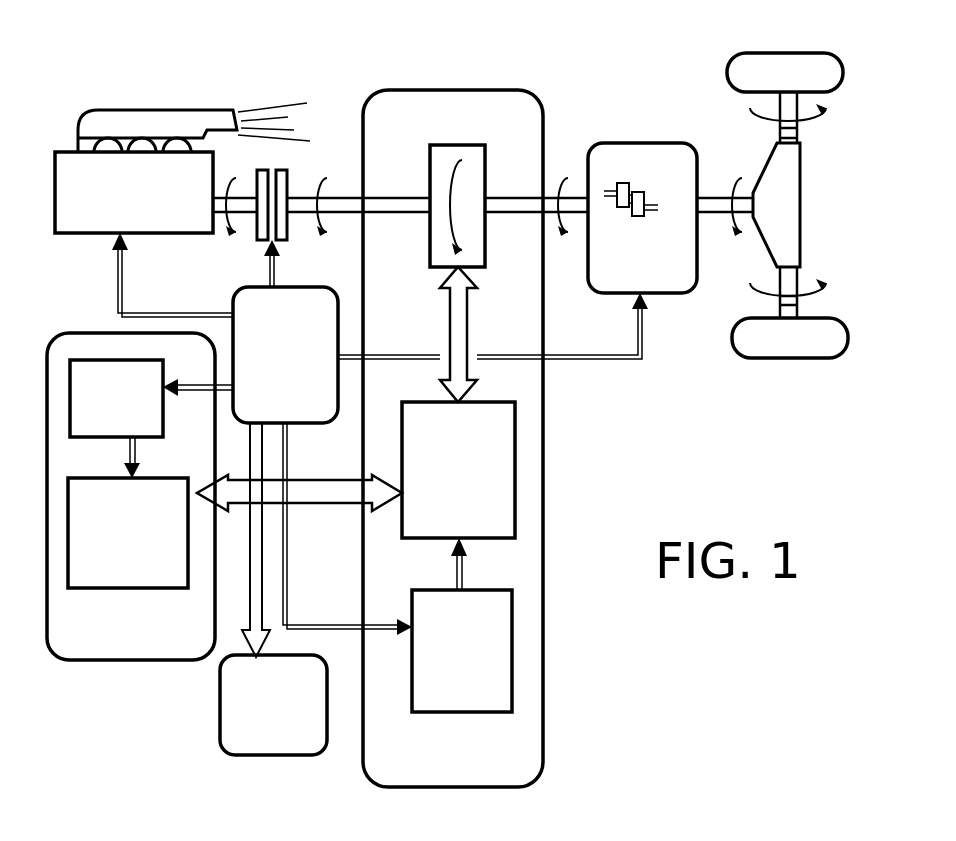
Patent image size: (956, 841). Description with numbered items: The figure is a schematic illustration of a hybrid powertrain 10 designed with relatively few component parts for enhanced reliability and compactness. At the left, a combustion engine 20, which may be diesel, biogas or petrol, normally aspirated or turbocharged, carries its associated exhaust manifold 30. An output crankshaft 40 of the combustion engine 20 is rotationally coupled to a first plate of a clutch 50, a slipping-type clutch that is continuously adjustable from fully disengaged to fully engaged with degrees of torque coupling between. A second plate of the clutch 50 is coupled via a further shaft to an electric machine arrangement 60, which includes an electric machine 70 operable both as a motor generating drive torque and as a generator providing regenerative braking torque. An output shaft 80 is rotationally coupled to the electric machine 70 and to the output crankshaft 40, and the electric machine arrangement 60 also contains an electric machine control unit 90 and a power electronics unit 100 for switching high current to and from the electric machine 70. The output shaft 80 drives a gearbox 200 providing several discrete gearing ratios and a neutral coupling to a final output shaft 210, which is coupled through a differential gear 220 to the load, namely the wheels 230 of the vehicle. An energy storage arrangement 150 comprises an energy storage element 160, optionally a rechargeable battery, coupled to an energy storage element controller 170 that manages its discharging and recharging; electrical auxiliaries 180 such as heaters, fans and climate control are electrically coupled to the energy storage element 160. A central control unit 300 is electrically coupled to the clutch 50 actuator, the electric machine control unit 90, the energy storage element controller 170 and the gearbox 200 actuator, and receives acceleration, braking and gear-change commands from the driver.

The hybrid powertrain 10 is at (126, 720).
The combustion engine 20 is at (98, 201).
The exhaust manifold 30 is at (122, 128).
The output crankshaft 40 is at (240, 200).
The clutch 50 is at (277, 166).
The electric machine arrangement 60 is at (469, 762).
The electric machine 70 is at (437, 157).
The output shaft 80 is at (518, 207).
The electric machine control unit 90 is at (470, 649).
The power electronics unit 100 is at (433, 471).
The energy storage arrangement 150 is at (101, 649).
The energy storage element 160 is at (99, 542).
The energy storage element controller 170 is at (91, 414).
The electrical auxiliaries 180 is at (246, 716).
The gearbox 200 is at (616, 271).
The final output shaft 210 is at (715, 203).
The differential gear 220 is at (787, 208).
The wheels 230 is at (793, 70).
The central control unit 300 is at (261, 369).